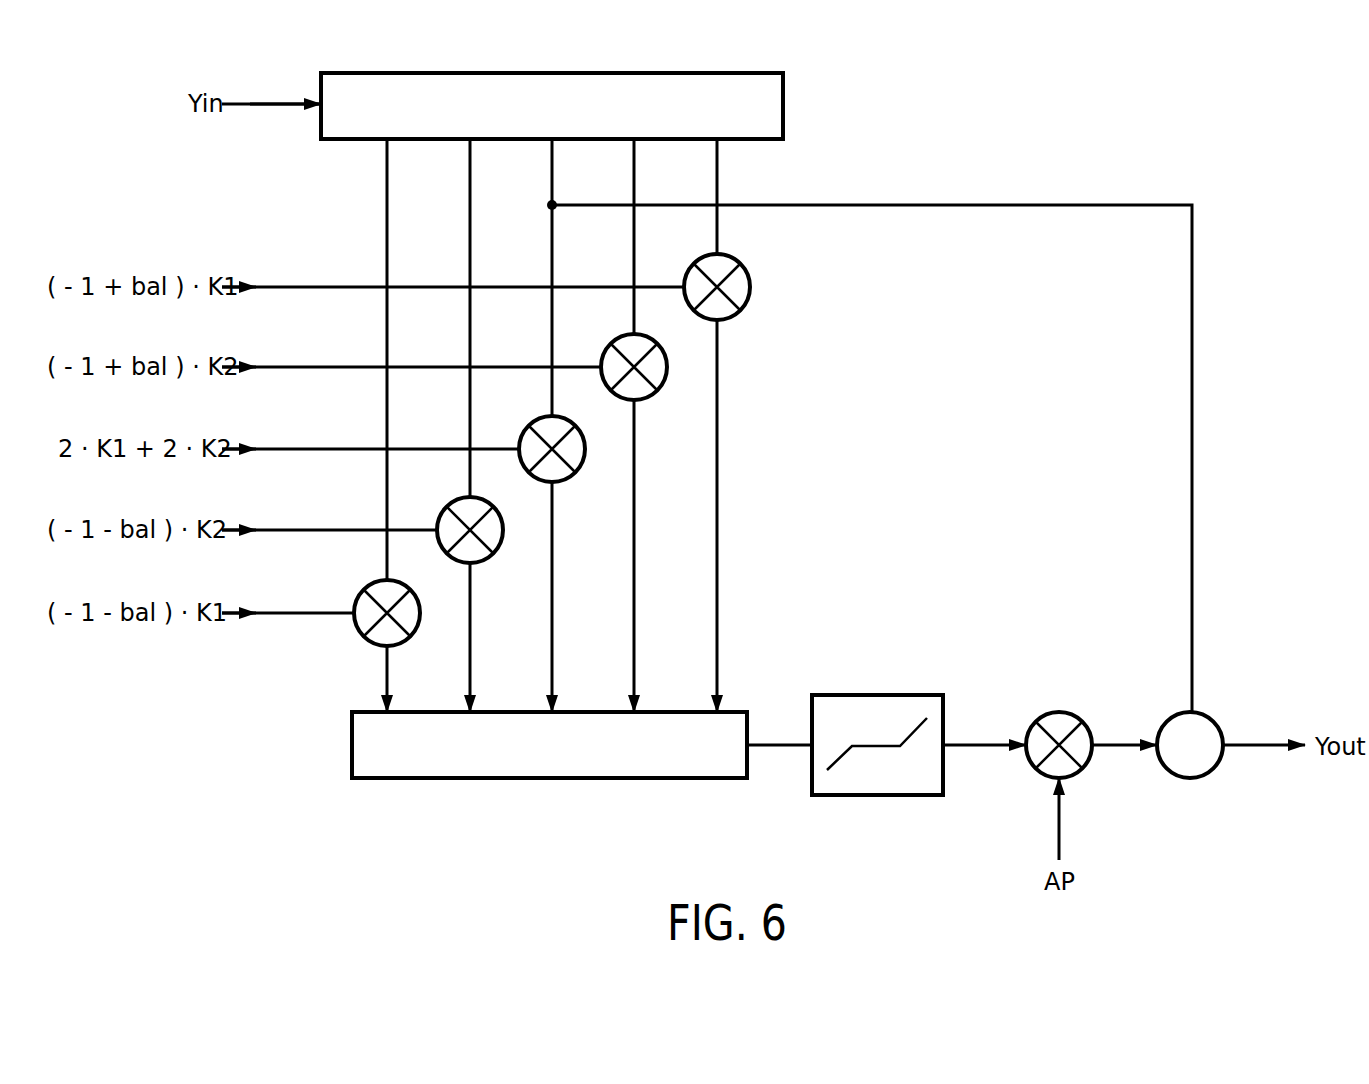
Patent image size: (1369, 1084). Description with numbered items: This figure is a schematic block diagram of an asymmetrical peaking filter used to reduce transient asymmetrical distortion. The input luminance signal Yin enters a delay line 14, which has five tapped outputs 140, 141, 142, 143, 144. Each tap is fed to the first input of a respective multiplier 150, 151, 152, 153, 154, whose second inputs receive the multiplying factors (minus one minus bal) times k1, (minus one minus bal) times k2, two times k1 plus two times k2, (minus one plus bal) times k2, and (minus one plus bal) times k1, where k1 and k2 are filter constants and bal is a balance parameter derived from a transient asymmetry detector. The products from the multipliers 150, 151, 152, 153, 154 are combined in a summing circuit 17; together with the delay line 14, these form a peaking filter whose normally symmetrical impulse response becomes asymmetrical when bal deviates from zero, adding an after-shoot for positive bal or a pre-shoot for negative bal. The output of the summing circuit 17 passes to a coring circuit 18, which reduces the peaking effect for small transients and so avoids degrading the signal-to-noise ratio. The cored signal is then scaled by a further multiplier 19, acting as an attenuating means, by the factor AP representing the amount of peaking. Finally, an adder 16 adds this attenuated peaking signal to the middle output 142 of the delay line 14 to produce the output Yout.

The delay line 14 is at (788, 94).
The delay line output 140 is at (412, 359).
The delay line output 141 is at (495, 318).
The middle delay line output 142 is at (577, 277).
The delay line output 143 is at (659, 236).
The delay line output 144 is at (742, 196).
The multiplier 150 is at (405, 643).
The multiplier 151 is at (488, 560).
The multiplier 152 is at (570, 479).
The multiplier 153 is at (651, 397).
The multiplier 154 is at (735, 316).
The adder 16 is at (1190, 778).
The summing circuit 17 is at (581, 780).
The coring circuit 18 is at (878, 797).
The multiplier 19 is at (1057, 712).